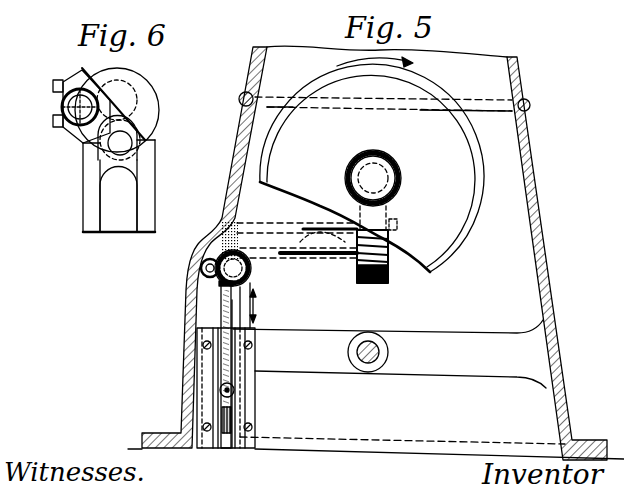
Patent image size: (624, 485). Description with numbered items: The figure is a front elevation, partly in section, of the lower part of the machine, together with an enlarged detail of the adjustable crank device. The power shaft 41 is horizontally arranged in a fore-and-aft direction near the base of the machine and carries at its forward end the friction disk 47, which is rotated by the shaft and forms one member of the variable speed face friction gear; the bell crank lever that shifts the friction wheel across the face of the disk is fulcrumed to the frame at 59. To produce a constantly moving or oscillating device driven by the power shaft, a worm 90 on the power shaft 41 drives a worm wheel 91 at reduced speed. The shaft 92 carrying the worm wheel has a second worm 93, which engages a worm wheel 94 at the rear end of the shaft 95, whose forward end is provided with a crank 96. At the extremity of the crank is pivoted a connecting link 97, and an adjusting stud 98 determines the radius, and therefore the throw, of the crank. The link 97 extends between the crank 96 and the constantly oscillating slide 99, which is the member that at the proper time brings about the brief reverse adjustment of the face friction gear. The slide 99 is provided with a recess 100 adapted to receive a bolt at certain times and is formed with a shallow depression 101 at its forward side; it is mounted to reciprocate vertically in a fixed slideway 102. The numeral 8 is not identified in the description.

In FIG. 5, the feed rod 8 is at (220, 300).
In FIG. 5, the power shaft 41 is at (378, 176).
In FIG. 5, the friction disk 47 is at (372, 164).
In FIG. 5, the fulcrum 59 is at (376, 359).
In FIG. 5, the worm 90 is at (358, 166).
In FIG. 5, the worm wheel 91 is at (385, 282).
In FIG. 5, the shaft 92 is at (277, 249).
In FIG. 5, the second worm 93 is at (223, 228).
In FIG. 5, the worm wheel 94 is at (246, 262).
In FIG. 5, the shaft 95 is at (220, 243).
In FIG. 6, the shaft 95 is at (146, 84).
In FIG. 5, the crank 96 is at (250, 284).
In FIG. 6, the crank 96 is at (146, 88).
In FIG. 5, the connecting link 97 is at (204, 278).
In FIG. 6, the connecting link 97 is at (90, 128).
In FIG. 5, the adjusting stud 98 is at (201, 264).
In FIG. 6, the adjusting stud 98 is at (62, 108).
In FIG. 5, the slide 99 is at (228, 313).
In FIG. 6, the slide 99 is at (118, 200).
In FIG. 5, the recess 100 is at (234, 390).
In FIG. 5, the shallow depression 101 is at (217, 332).
In FIG. 6, the shallow depression 101 is at (120, 218).
In FIG. 5, the fixed slideway 102 is at (247, 410).